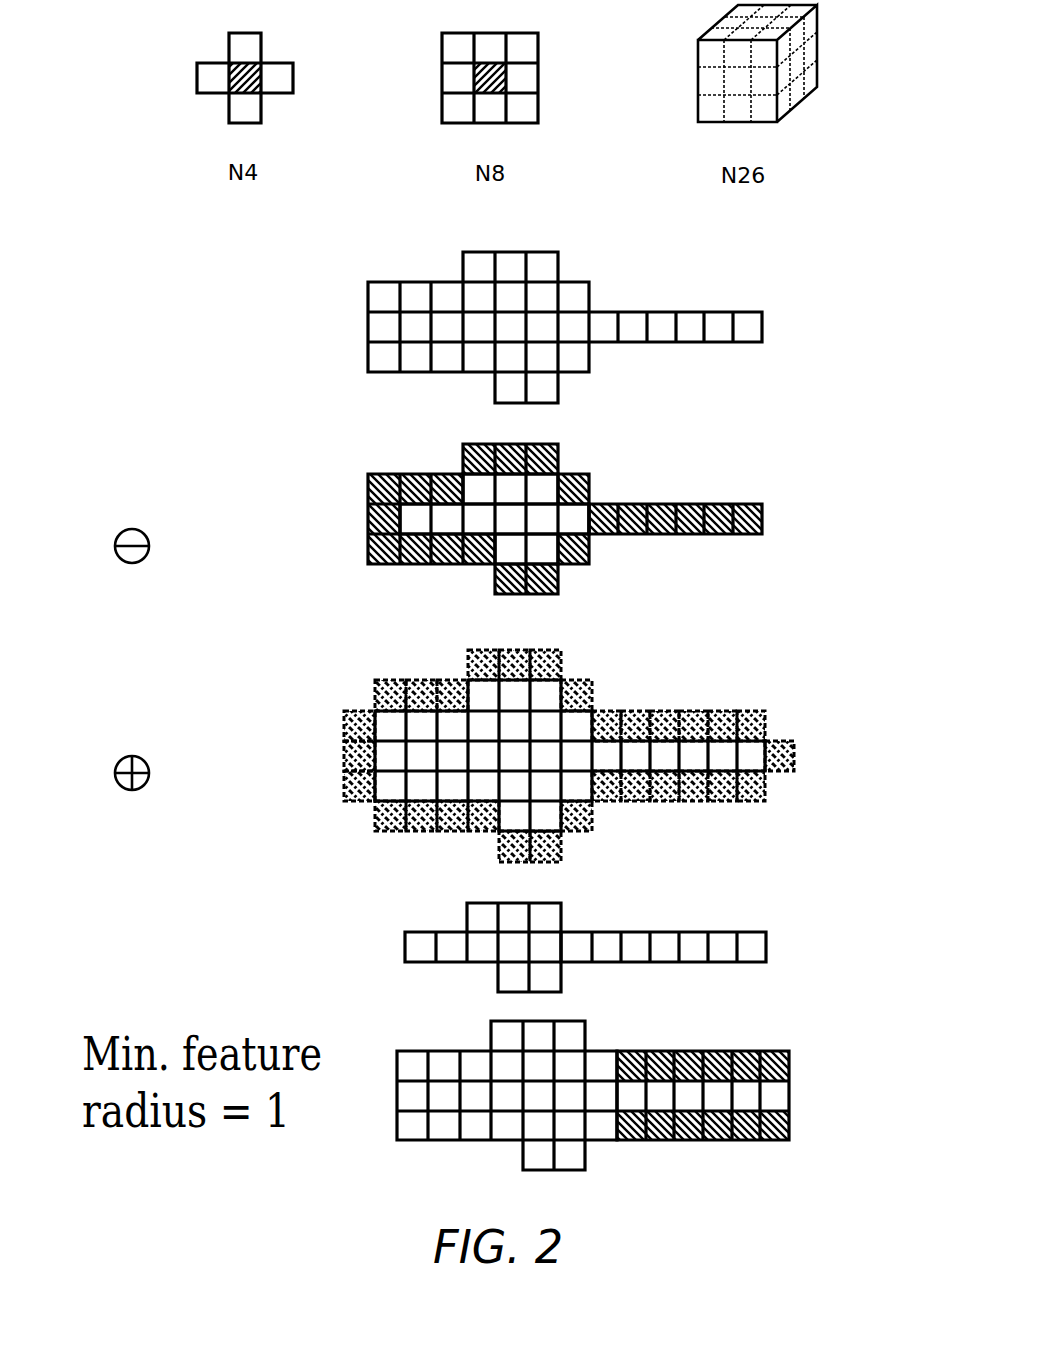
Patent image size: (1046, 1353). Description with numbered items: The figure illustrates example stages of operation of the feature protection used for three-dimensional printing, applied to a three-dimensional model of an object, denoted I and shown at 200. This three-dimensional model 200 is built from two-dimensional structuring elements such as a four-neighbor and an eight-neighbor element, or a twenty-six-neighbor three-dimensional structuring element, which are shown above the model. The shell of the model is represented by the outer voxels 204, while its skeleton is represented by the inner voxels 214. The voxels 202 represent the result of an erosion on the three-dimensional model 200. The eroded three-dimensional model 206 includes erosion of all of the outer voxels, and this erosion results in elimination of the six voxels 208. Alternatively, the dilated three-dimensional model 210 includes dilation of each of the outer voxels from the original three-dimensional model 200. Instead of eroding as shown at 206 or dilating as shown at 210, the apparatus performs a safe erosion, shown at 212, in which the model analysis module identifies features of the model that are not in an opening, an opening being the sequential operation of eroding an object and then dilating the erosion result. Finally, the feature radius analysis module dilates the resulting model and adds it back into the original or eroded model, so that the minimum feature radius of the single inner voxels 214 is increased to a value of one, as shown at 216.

The three-dimensional model I 200 is at (217, 293).
The voxels 202 is at (542, 490).
The outer voxels 204 is at (695, 508).
The eroded three-dimensional model 206 is at (152, 453).
The six voxels 208 is at (695, 567).
The dilated three-dimensional model 210 is at (148, 685).
The safe erosion 212 is at (167, 912).
The inner voxels 214 is at (718, 918).
The minimum feature radius result 216 is at (757, 1047).